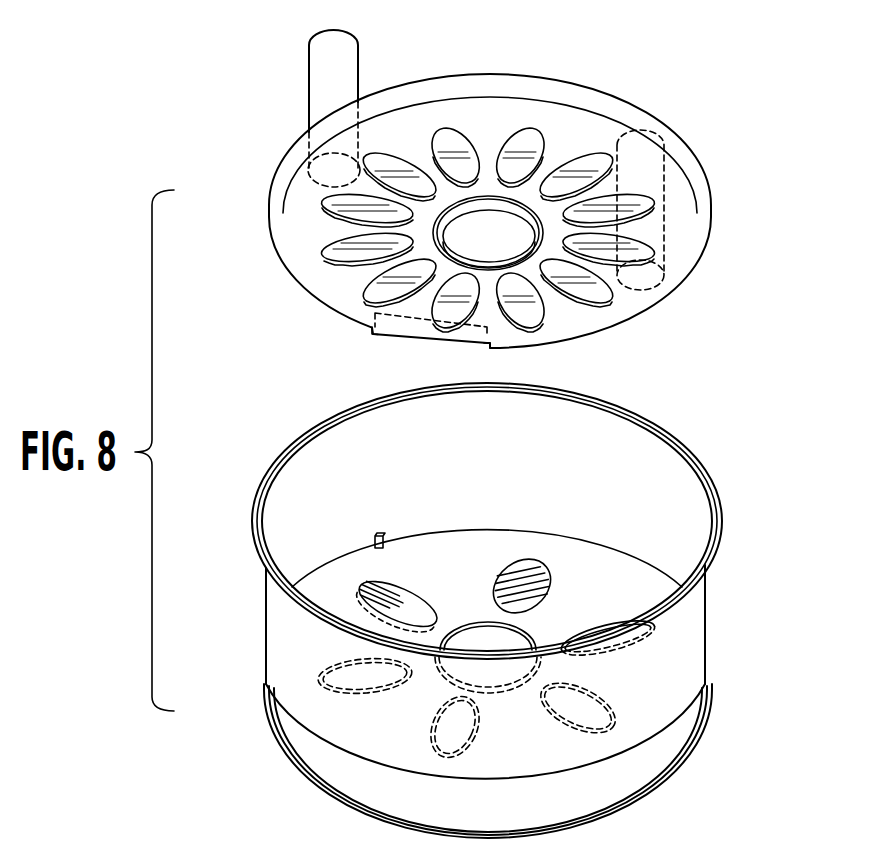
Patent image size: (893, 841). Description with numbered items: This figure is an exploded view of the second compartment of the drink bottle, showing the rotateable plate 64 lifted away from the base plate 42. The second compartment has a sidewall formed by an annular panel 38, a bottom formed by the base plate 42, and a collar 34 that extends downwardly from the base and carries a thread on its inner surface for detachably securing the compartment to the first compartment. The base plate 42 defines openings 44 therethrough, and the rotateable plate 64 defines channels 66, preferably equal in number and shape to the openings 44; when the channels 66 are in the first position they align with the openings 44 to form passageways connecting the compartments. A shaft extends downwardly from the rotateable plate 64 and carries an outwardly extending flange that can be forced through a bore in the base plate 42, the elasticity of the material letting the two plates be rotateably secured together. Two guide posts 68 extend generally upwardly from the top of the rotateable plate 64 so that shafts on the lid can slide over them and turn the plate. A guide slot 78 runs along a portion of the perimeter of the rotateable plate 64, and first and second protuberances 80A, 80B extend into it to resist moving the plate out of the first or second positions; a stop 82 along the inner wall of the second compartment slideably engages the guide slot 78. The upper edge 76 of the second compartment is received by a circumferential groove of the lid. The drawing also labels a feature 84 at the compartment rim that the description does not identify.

The collar 34 is at (687, 727).
The annular panel 38 is at (514, 437).
The base plate 42 is at (487, 558).
The openings 44 is at (542, 563).
The rotateable plate 64 is at (683, 238).
The channels 66 is at (460, 133).
The guide post 68 is at (323, 73).
The upper edge 76 is at (650, 423).
The guide slot 78 is at (403, 340).
The first protuberance 80A is at (377, 330).
The second protuberance 80B is at (488, 346).
The stop member 82 is at (383, 533).
The slot in rim 84 is at (533, 633).